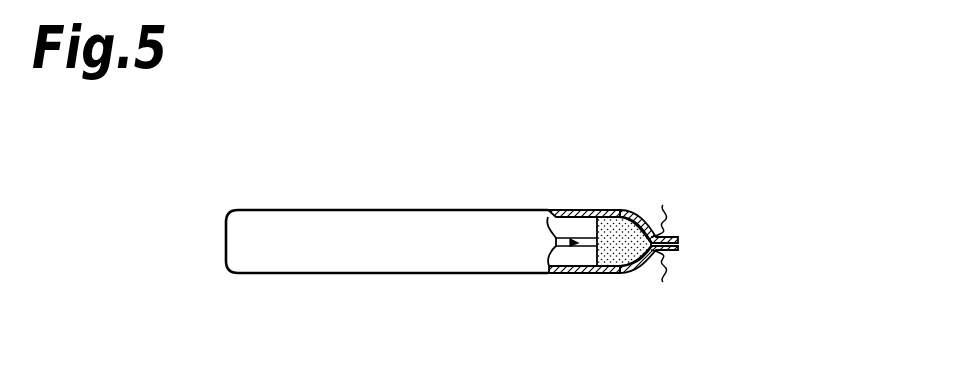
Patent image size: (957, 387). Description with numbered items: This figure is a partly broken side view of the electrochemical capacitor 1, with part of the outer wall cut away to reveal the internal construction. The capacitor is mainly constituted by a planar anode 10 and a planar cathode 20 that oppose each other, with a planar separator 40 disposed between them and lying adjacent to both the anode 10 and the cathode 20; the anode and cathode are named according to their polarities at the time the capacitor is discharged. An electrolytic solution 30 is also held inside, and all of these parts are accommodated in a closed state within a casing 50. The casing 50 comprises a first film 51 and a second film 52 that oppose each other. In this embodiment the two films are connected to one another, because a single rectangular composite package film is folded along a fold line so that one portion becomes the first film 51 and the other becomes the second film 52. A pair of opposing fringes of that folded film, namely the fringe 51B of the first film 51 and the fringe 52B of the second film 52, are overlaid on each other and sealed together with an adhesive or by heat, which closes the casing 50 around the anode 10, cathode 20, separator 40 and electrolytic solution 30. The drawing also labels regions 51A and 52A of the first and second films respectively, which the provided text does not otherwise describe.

The electrochemical capacitor 1 is at (553, 134).
The anode 10 is at (585, 232).
The cathode 20 is at (568, 256).
The electrolytic solution 30 is at (603, 273).
The separator 40 is at (580, 240).
The casing 50 is at (755, 242).
The first film 51 is at (720, 193).
The upper nozzle wall 51A is at (612, 209).
The fringe of the first film 51B is at (663, 205).
The second film 52 is at (720, 293).
The lower nozzle wall 52A is at (612, 273).
The fringe of the second film 52B is at (663, 282).